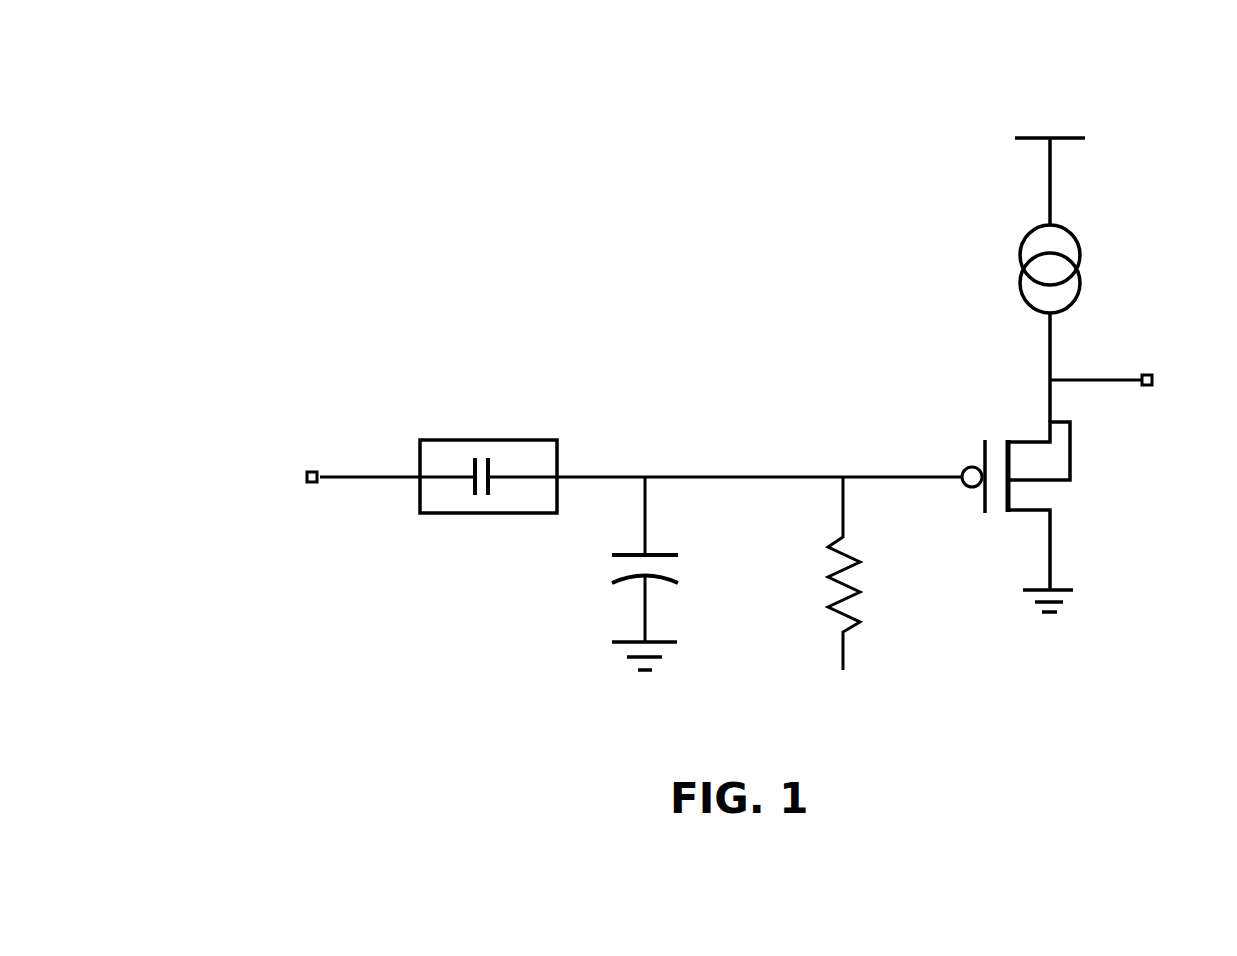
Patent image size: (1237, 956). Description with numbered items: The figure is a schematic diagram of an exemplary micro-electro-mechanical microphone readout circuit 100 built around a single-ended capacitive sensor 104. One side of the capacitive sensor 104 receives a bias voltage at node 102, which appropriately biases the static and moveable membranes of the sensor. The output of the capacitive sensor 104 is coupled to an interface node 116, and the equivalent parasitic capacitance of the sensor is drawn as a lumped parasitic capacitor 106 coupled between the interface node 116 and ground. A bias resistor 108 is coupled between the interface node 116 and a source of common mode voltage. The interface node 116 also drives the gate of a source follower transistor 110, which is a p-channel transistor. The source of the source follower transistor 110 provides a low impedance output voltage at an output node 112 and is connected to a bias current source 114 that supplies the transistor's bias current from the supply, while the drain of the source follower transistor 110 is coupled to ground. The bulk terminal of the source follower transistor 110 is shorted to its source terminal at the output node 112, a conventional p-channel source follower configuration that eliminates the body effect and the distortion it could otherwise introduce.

The MEMS microphone readout circuit 100 is at (292, 169).
The node 102 is at (309, 483).
The MEMS capacitive sensor 104 is at (440, 513).
The parasitic capacitor Cp 106 is at (657, 555).
The bias resistor RBIAS 108 is at (828, 603).
The source follower transistor PSF 110 is at (983, 503).
The output node 112 is at (1145, 387).
The bias current source 114 is at (1080, 246).
The interface node 116 is at (755, 473).